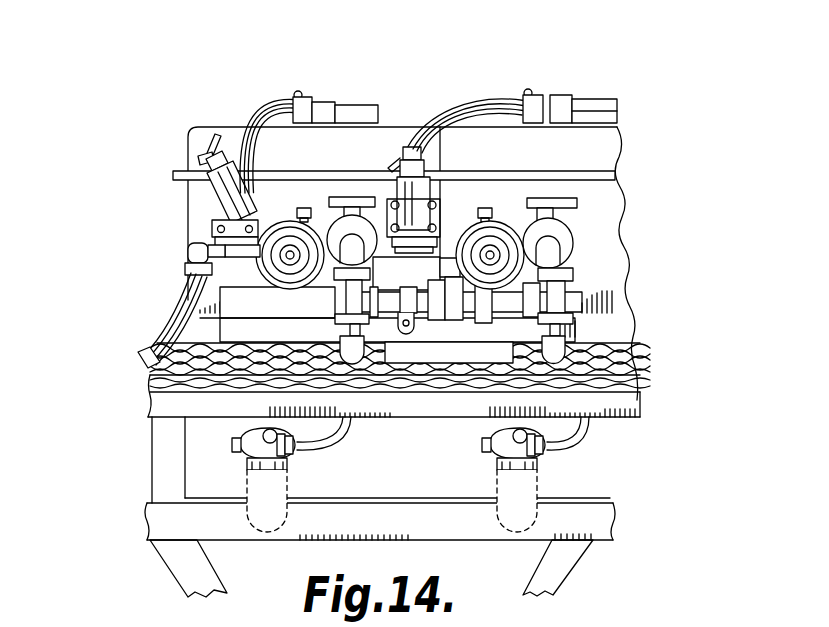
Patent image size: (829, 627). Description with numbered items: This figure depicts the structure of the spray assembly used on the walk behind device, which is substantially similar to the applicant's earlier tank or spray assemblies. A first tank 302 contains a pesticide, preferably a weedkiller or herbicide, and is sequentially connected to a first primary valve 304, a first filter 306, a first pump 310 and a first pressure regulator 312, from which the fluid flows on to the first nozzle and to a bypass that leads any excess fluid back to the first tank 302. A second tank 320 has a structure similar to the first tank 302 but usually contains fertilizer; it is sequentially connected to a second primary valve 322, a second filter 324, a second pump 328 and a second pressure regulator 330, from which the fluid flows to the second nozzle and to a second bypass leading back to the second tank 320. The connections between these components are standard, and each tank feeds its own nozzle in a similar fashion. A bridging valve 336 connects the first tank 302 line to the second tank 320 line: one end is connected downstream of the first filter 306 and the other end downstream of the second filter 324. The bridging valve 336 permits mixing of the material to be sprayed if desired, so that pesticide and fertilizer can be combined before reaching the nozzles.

The first tank 302 is at (557, 97).
The first primary valve 304 is at (567, 240).
The first filter 306 is at (533, 463).
The first pump 310 is at (497, 245).
The first pressure regulator 312 is at (388, 122).
The second tank 320 is at (320, 100).
The second primary valve 322 is at (262, 257).
The second filter 324 is at (263, 480).
The second pump 328 is at (185, 312).
The second pressure regulator 330 is at (212, 196).
The bridging valve 336 is at (643, 358).